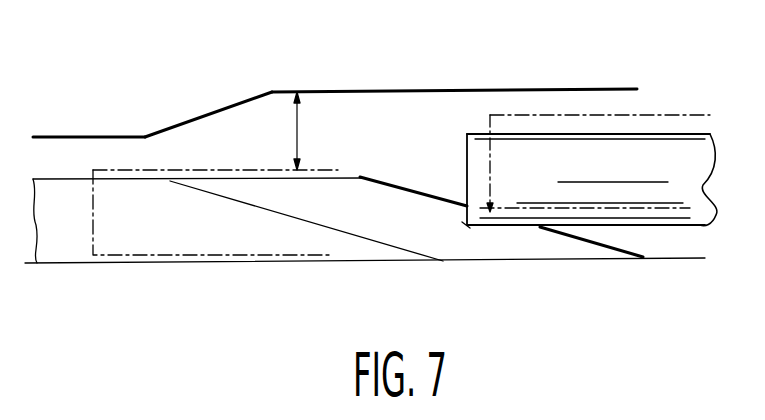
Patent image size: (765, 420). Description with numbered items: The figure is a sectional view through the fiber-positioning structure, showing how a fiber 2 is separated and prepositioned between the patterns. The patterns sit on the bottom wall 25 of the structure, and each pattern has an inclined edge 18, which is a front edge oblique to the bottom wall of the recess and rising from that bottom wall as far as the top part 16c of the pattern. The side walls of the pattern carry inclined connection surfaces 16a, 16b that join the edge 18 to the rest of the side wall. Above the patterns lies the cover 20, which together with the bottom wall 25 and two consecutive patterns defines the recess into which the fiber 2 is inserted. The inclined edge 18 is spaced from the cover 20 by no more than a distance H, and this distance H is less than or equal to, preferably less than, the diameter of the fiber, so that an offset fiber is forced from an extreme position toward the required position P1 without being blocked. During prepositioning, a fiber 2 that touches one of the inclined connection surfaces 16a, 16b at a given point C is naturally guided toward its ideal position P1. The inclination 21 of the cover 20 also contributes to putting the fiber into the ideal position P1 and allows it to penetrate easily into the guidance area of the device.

The inclination of the cover 21 is at (150, 130).
The top part of the pattern 16c is at (222, 178).
The cover 20 is at (383, 90).
The fiber 2 is at (582, 138).
The edge 18 is at (397, 185).
The required position P1 is at (212, 257).
The contact point C is at (465, 224).
The inclined connection surface 16a is at (470, 235).
The inclined connection surface 16b is at (579, 275).
The bottom wall 25 is at (673, 258).
The distance H is at (284, 131).